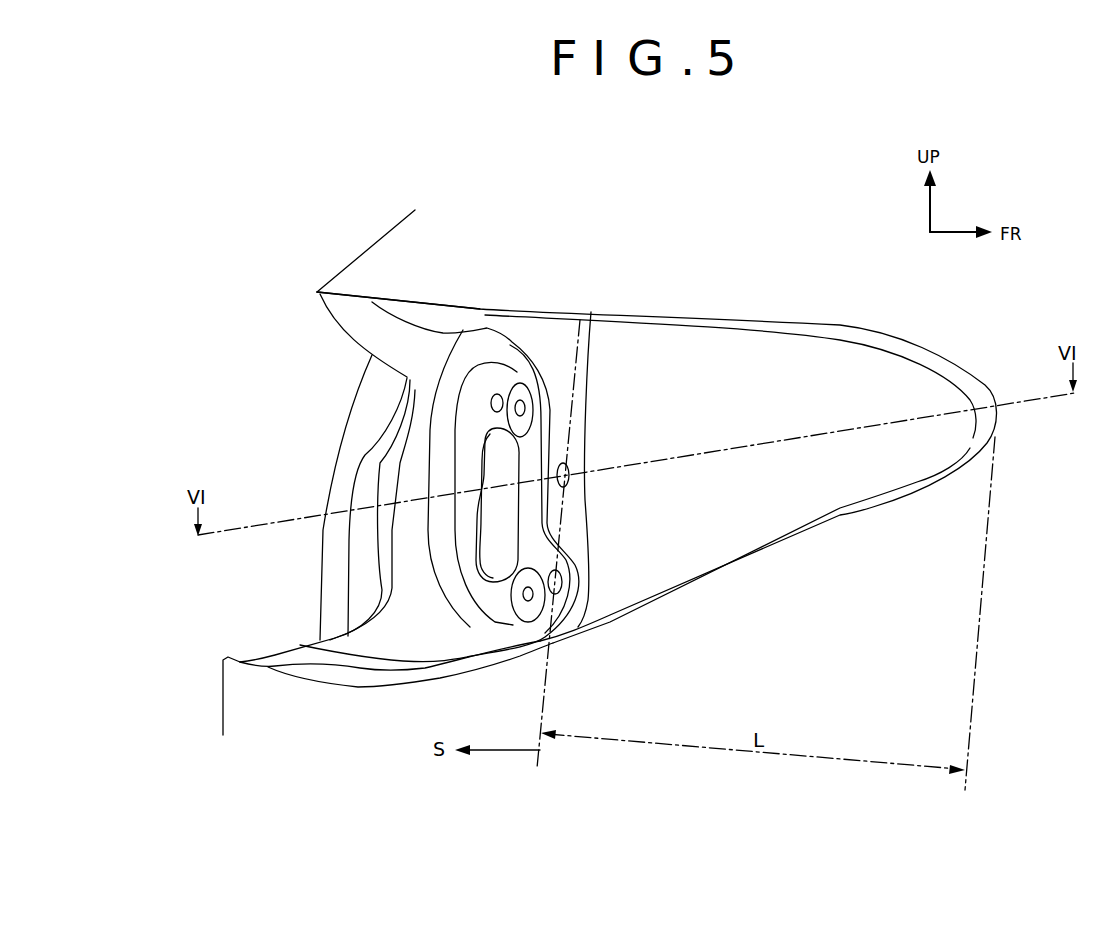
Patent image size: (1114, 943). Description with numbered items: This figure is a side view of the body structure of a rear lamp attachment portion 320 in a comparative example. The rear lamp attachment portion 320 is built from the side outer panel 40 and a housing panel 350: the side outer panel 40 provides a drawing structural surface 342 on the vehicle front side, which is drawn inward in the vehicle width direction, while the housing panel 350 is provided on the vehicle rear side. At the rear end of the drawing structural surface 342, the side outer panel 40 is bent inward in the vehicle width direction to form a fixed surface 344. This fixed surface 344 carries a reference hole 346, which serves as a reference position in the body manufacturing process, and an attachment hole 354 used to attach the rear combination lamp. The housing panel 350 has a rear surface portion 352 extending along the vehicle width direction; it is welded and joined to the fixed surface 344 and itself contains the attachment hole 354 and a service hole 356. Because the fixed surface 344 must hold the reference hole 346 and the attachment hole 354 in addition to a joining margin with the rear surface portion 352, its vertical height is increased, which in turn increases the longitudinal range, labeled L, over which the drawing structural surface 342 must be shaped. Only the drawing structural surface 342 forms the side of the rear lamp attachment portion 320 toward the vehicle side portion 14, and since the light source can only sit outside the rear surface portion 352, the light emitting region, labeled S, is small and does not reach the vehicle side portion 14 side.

The vehicle side portion 14 is at (867, 568).
The side outer panel 40 is at (825, 257).
The rear lamp attachment portion 320 is at (382, 333).
The drawing structural surface 342 is at (742, 370).
The fixed surface 344 is at (557, 395).
The reference hole 346 is at (569, 480).
The housing panel 350 is at (473, 313).
The rear surface portion 352 is at (497, 345).
The attachment hole 354 is at (503, 403).
The service hole 356 is at (510, 535).